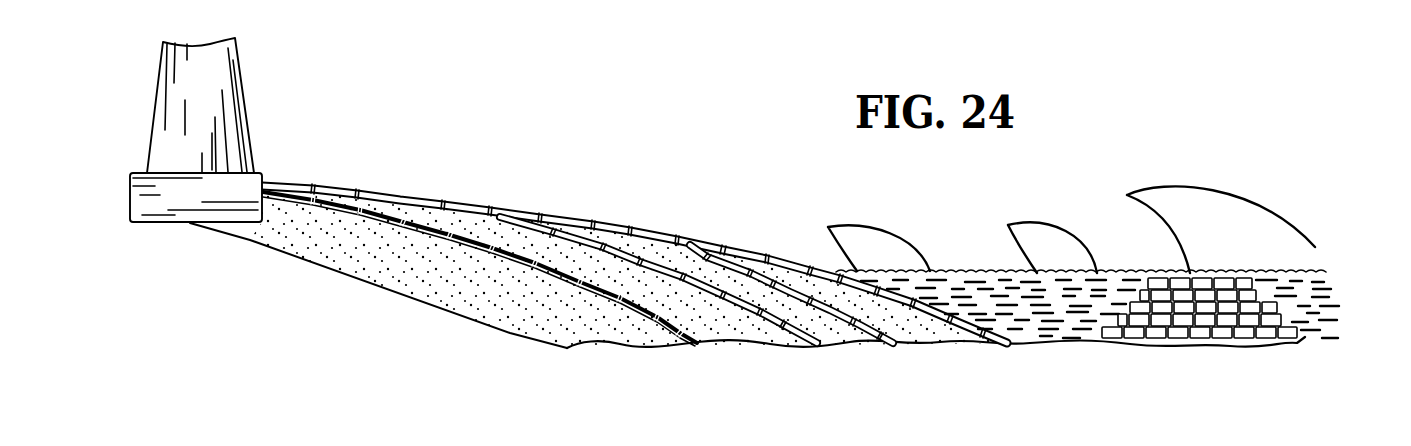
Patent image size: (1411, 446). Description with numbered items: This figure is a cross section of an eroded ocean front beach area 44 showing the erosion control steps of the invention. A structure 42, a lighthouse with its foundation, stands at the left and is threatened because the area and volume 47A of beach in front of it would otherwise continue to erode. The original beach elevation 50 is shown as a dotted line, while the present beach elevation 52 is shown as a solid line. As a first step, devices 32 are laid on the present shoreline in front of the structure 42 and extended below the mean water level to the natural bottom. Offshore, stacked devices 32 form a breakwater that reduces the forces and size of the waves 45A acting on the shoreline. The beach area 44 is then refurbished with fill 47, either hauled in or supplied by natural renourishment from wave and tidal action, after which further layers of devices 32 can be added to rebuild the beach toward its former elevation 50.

The devices 32 is at (640, 301).
The structure 42 is at (245, 118).
The beach area 44 is at (320, 296).
The waves 45A is at (877, 226).
The fill 47 is at (727, 330).
The area and volume 47A is at (424, 272).
The original beach elevation 50 is at (613, 227).
The present beach elevation 52 is at (413, 228).